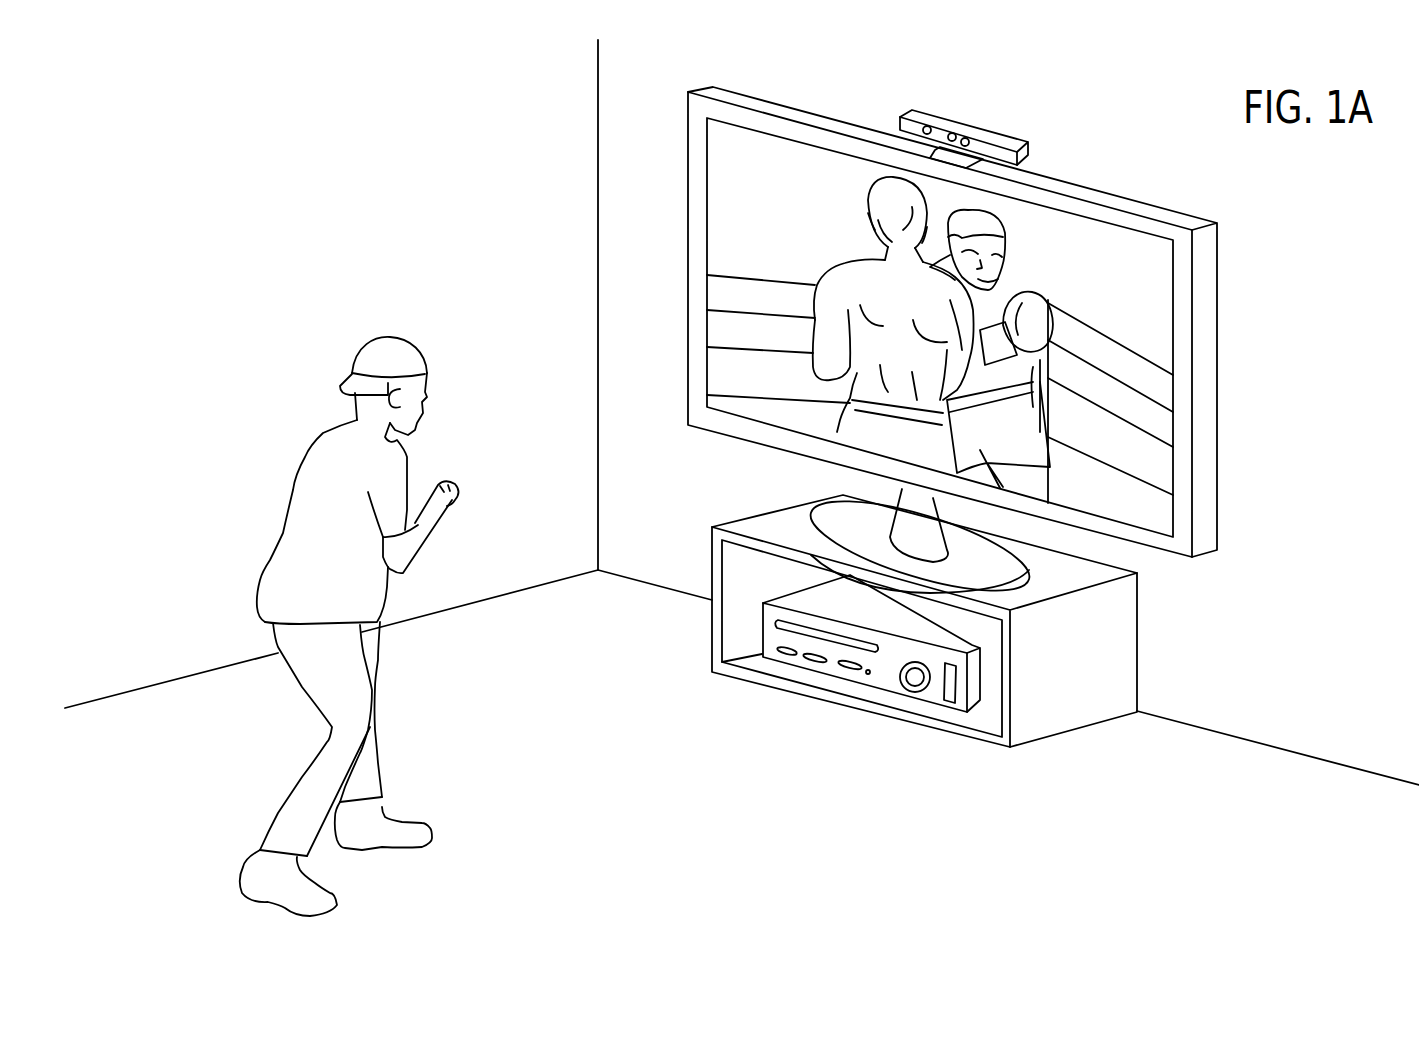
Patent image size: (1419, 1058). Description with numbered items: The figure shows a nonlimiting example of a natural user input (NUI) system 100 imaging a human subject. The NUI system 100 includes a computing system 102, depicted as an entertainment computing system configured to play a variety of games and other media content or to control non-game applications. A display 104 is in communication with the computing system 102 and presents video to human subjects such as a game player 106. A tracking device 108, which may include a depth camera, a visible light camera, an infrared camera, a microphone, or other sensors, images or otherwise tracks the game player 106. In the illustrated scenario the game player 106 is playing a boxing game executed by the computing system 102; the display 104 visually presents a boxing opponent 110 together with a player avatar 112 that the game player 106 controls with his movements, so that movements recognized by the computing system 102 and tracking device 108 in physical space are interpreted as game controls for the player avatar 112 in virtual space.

The natural user input (NUI) system 100 is at (1076, 62).
The computing system 102 is at (887, 687).
The display 104 is at (1218, 322).
The game player 106 is at (375, 747).
The tracking device 108 is at (998, 138).
The boxing opponent 110 is at (1002, 250).
The player avatar 112 is at (815, 272).